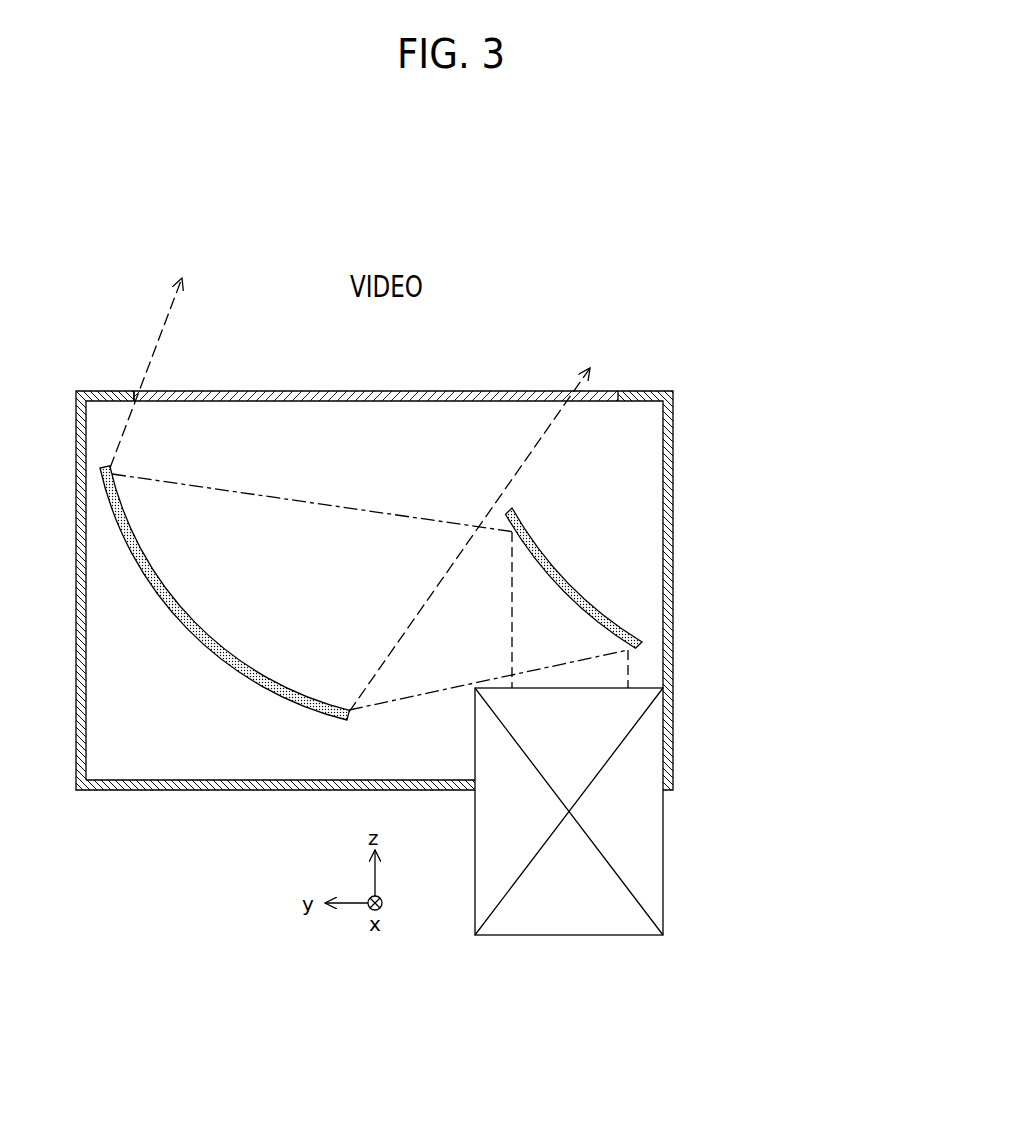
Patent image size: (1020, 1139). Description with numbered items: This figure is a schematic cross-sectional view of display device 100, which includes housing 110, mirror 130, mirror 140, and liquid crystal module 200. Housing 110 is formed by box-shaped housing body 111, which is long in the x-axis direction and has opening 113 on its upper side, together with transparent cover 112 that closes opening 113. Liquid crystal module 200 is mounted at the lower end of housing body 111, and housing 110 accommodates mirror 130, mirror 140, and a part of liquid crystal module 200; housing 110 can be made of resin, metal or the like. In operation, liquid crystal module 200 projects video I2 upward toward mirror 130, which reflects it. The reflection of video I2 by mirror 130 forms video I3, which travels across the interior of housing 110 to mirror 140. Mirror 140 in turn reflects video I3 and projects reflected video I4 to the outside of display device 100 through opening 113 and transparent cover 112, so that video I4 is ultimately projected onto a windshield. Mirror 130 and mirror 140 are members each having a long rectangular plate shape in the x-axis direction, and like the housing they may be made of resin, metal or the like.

The display device 100 is at (634, 311).
The housing 110 is at (740, 341).
The housing body 111 is at (673, 508).
The transparent cover 112 is at (602, 393).
The opening 113 is at (137, 392).
The mirror 130 is at (568, 583).
The mirror 140 is at (192, 632).
The liquid crystal module 200 is at (650, 857).
The video I2 is at (628, 676).
The video I3 is at (427, 690).
The video I4 is at (170, 310).